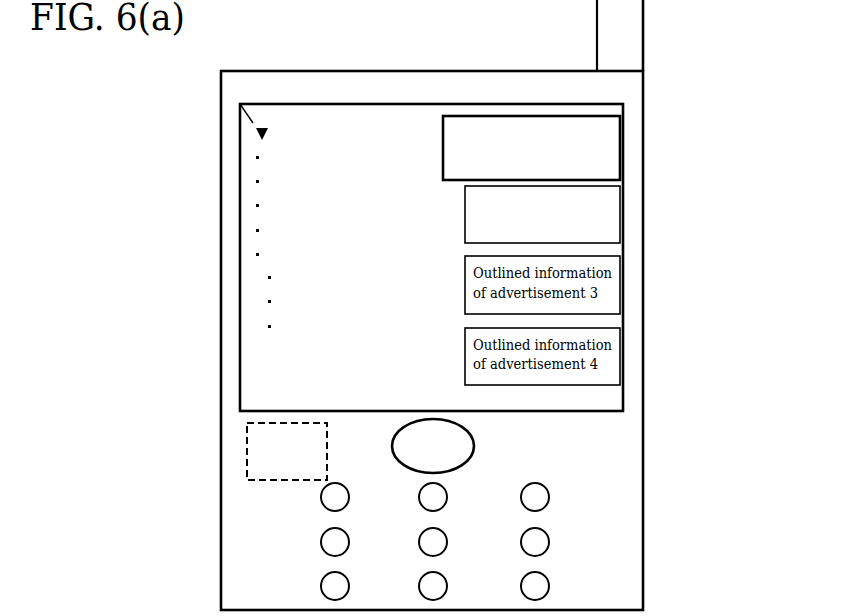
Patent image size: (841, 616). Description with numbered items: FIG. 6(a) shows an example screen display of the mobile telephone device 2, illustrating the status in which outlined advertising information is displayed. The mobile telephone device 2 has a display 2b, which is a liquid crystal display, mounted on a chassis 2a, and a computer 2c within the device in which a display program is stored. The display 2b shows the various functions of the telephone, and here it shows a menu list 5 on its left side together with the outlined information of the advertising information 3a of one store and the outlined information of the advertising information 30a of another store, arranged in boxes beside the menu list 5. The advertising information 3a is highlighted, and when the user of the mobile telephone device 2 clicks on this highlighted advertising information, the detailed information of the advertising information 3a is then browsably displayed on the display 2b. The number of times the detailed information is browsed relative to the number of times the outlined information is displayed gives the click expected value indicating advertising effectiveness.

The mobile telephone device 2 is at (424, 60).
The chassis 2a is at (610, 477).
The display 2b is at (610, 402).
The computer 2c is at (262, 466).
The menu list 5 is at (240, 104).
The advertising information 3a is at (610, 152).
The advertising information 30a is at (605, 233).